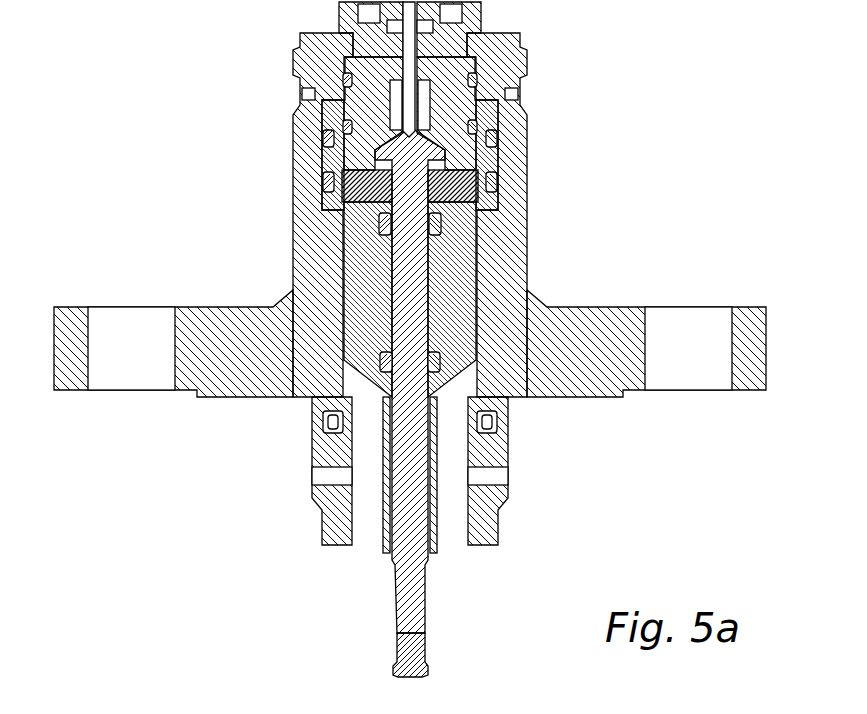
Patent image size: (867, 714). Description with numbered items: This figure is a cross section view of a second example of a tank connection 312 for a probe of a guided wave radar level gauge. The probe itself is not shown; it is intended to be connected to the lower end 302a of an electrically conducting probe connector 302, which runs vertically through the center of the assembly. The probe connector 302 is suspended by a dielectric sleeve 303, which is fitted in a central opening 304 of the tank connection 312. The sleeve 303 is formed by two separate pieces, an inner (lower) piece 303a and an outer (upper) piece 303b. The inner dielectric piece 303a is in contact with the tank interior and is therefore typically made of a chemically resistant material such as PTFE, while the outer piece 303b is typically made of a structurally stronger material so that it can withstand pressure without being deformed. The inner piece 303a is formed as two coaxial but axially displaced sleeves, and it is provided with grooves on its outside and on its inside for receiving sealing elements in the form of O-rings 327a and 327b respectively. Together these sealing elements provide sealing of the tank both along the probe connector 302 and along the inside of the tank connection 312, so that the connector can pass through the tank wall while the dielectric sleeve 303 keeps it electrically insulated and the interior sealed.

The probe connector 302 is at (417, 484).
The lower end of the probe connector 302a is at (420, 646).
The dielectric sleeve 303 is at (452, 255).
The inner (lower) piece 303a is at (370, 327).
The outer (upper) piece 303b is at (330, 183).
The central opening 304 is at (370, 423).
The tank connection 312 is at (508, 186).
The O-ring 327a is at (500, 128).
The O-ring 327b is at (380, 230).